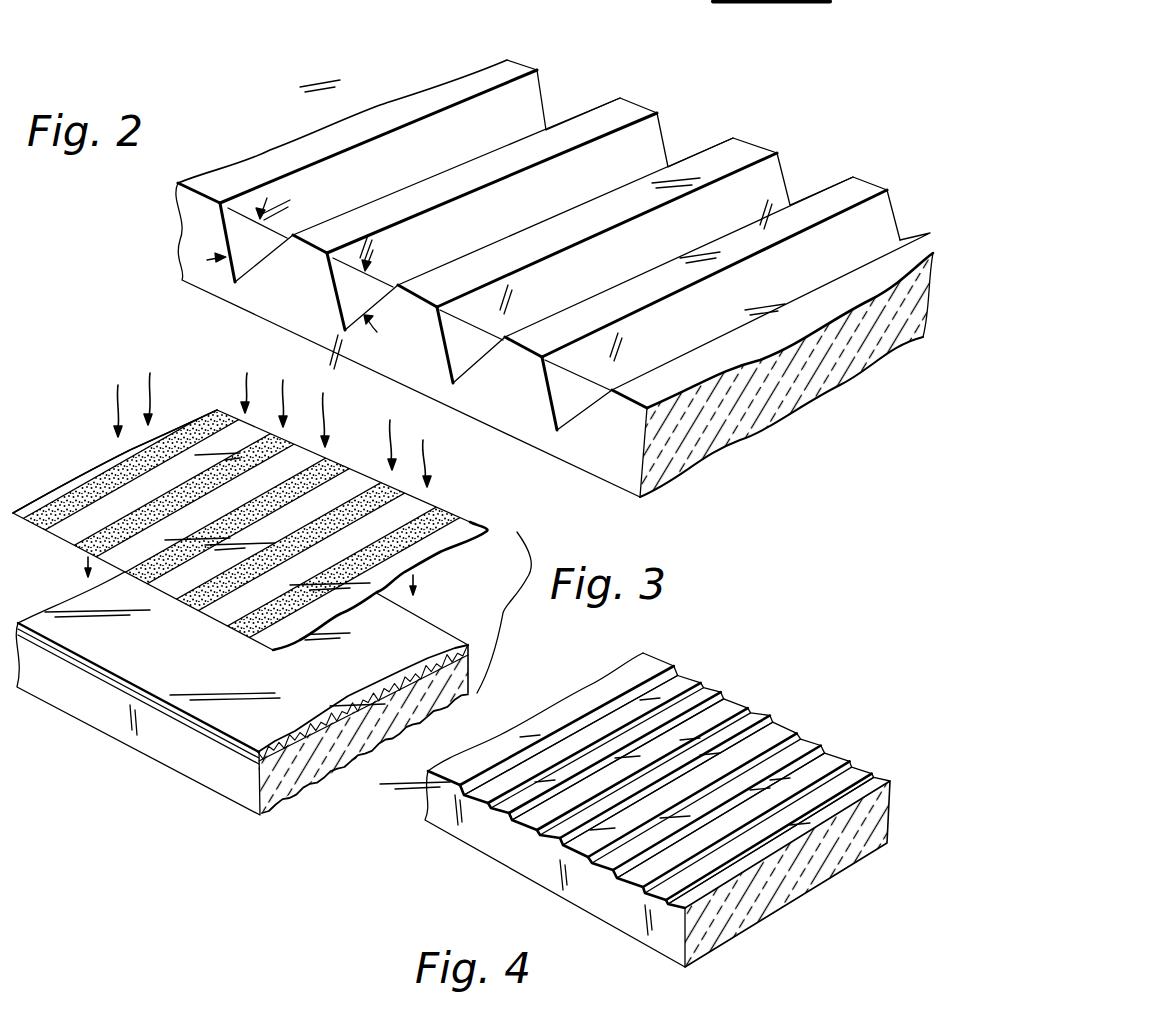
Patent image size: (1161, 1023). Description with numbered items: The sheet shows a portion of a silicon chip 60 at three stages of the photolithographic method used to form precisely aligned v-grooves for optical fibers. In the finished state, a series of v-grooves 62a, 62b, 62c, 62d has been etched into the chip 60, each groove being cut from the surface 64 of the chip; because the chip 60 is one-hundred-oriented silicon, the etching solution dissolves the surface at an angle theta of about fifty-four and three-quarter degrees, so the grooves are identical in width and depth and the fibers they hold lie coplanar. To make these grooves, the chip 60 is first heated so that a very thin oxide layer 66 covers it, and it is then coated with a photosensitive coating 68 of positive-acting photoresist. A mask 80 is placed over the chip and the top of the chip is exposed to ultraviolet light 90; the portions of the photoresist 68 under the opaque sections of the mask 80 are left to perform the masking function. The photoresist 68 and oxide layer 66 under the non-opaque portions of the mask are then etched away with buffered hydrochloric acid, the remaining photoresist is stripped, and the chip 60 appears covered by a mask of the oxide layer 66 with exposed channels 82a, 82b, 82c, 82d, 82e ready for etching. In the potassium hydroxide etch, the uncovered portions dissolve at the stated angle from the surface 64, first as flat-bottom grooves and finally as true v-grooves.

In FIG. 2, the chip 60 is at (192, 230).
In FIG. 3, the chip 60 is at (172, 752).
In FIG. 4, the chip 60 is at (450, 820).
In FIG. 2, the V-groove 62a is at (550, 112).
In FIG. 2, the V-groove 62b is at (673, 148).
In FIG. 2, the V-groove 62c is at (790, 185).
In FIG. 2, the V-groove 62d is at (907, 233).
In FIG. 2, the surface 64 is at (513, 67).
In FIG. 3, the oxide layer 66 is at (55, 655).
In FIG. 4, the oxide layer 66 is at (767, 707).
In FIG. 3, the photosensitive coating 68 is at (25, 622).
In FIG. 3, the mask 80 is at (467, 533).
In FIG. 3, the ultraviolet light 90 is at (258, 481).
In FIG. 4, the channel 82a is at (563, 747).
In FIG. 4, the channel 82b is at (537, 813).
In FIG. 4, the channel 82c is at (553, 860).
In FIG. 4, the channel 82d is at (633, 870).
In FIG. 4, the channel 82e is at (663, 900).